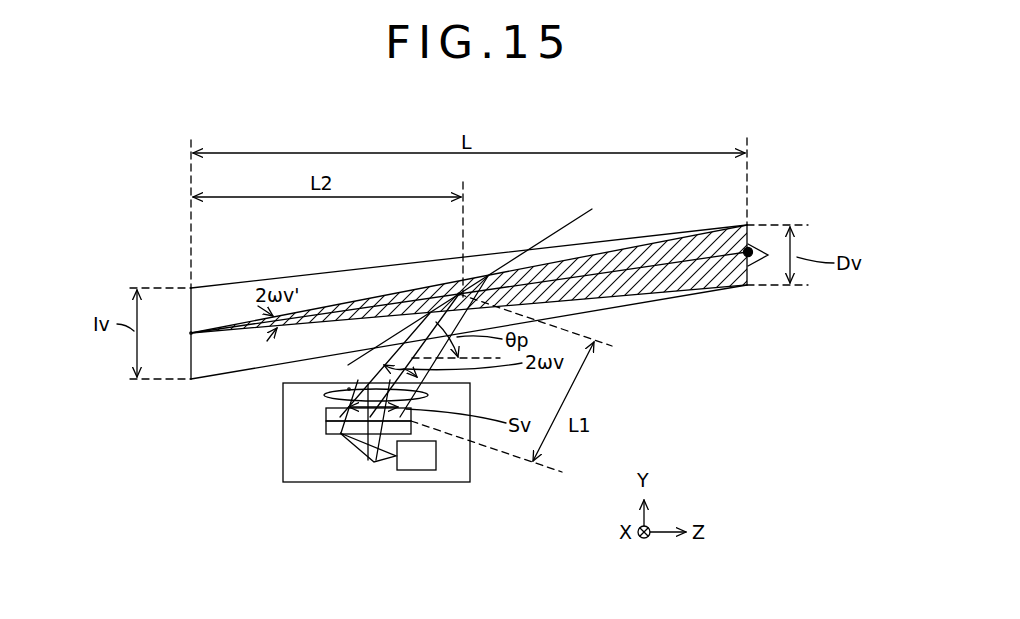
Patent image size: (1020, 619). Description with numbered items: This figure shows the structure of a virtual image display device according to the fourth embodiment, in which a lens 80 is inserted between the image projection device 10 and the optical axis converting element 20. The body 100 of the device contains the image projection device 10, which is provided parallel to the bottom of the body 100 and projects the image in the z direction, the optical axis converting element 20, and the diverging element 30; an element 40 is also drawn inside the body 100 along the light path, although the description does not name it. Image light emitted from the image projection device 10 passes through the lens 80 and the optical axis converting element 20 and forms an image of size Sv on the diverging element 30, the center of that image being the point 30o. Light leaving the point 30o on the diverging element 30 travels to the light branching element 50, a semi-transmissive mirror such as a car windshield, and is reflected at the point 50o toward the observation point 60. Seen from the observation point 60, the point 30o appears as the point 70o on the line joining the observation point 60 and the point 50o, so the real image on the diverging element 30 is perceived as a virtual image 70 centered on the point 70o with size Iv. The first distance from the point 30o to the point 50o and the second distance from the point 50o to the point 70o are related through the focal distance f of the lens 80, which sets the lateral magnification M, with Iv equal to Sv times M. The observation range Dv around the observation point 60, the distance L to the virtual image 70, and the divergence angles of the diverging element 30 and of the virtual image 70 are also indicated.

The image projection device 10 is at (422, 466).
The optical axis converting element 20 is at (326, 428).
The diverging element 30 is at (326, 412).
The point 30o is at (349, 389).
The folding mirror 40 is at (378, 465).
The light branching element 50 is at (561, 230).
The point 50o is at (458, 294).
The observation point 60 is at (752, 261).
The virtual image 70 is at (190, 288).
The point 70o is at (190, 334).
The lens 80 is at (428, 394).
The body 100 is at (303, 470).